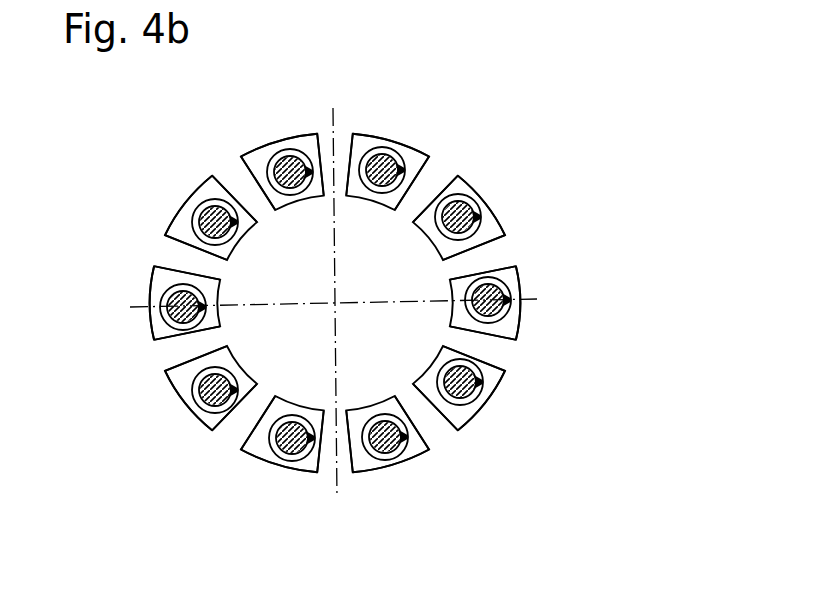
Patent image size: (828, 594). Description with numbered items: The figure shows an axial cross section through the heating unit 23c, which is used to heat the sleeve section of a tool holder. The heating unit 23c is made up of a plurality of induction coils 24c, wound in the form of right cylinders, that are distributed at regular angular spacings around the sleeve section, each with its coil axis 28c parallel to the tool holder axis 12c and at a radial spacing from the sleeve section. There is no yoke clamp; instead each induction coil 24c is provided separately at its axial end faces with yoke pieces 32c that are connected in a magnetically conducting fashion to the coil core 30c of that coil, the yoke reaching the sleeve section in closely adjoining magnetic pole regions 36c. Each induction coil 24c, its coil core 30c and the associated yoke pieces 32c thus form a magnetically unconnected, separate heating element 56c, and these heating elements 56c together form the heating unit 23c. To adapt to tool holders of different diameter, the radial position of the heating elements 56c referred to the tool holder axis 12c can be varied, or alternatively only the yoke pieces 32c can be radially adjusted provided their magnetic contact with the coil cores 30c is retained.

The tool holder axis 12c is at (341, 307).
The heating unit 23c is at (587, 258).
The induction coil 24c is at (210, 202).
The coil axis 28c is at (383, 161).
The coil core 30c is at (199, 222).
The yoke piece 32c is at (160, 333).
The magnetic pole region 36c is at (240, 240).
The heating element 56c is at (276, 136).